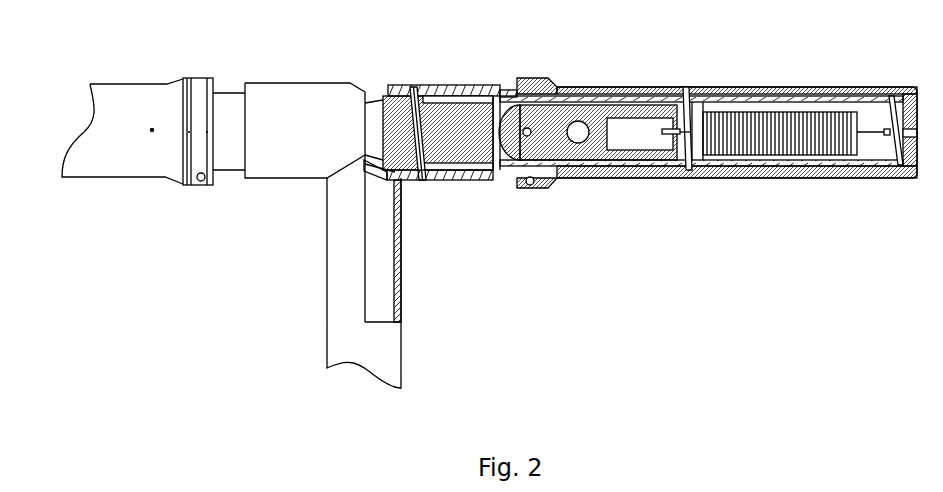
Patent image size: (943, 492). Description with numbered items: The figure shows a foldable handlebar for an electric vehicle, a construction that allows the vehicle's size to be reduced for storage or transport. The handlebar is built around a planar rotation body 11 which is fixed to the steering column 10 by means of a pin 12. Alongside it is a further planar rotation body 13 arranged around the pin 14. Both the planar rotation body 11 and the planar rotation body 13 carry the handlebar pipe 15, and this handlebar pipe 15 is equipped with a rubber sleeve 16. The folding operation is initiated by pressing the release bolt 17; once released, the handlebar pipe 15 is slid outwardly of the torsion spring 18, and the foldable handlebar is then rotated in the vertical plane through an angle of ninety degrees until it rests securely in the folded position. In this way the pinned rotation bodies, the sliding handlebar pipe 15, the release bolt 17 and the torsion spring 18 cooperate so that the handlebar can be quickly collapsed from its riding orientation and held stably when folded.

The steering column 10 is at (231, 233).
The planar rotation body 11 is at (432, 96).
The pin 12 is at (435, 232).
The planar rotation body 13 is at (600, 178).
The pin 14 is at (571, 234).
The handlebar pipe 15 is at (496, 100).
The rubber sleeve 16 is at (708, 102).
The release bolt 17 is at (717, 63).
The torsion spring 18 is at (803, 183).